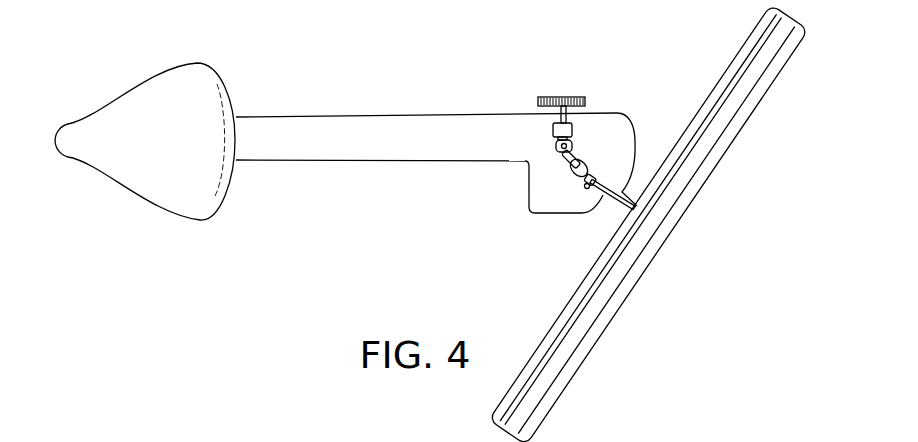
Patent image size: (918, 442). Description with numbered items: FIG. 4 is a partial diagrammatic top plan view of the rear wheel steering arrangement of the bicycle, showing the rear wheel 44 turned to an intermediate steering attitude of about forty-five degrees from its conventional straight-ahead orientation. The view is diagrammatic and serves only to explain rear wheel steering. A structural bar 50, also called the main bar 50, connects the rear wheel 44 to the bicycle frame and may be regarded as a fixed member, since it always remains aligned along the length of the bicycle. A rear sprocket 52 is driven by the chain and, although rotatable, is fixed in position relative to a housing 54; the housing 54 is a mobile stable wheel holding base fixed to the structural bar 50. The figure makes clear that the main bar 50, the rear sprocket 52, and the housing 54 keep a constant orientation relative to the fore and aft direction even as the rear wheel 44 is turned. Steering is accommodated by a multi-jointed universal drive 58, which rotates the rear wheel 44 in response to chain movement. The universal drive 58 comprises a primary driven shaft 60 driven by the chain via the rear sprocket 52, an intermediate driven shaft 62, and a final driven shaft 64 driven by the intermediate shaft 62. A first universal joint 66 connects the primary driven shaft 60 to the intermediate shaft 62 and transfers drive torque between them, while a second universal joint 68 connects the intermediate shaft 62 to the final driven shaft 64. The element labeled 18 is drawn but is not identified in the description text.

The handle 18 is at (145, 141).
The rear wheel 44 is at (773, 83).
The structural bar 50 is at (281, 115).
The rear sprocket 52 is at (565, 97).
The housing 54 is at (631, 114).
The multi-jointed universal drive 58 is at (322, 256).
The primary driven shaft 60 is at (560, 116).
The intermediate driven shaft 62 is at (534, 174).
The final driven shaft 64 is at (608, 207).
The first universal joint 66 is at (541, 147).
The second universal joint 68 is at (564, 193).